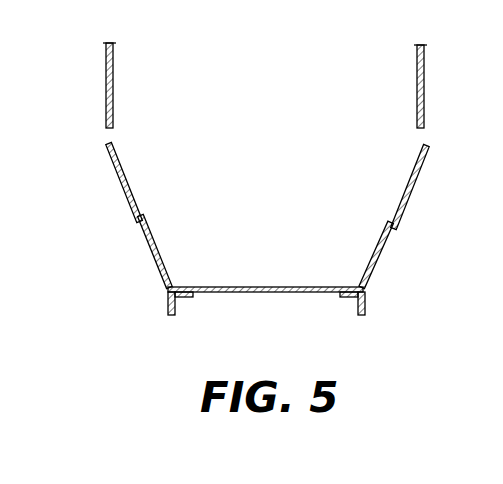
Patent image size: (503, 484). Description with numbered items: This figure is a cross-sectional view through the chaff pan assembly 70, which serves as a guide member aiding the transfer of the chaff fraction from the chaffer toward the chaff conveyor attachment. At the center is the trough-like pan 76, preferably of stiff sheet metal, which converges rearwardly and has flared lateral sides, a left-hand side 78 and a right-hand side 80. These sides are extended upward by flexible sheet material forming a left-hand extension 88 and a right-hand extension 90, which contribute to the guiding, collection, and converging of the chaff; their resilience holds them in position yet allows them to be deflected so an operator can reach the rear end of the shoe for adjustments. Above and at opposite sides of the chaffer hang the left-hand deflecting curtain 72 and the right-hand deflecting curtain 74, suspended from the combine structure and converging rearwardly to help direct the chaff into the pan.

The chaff pan assembly 70 is at (411, 305).
The left-hand deflecting curtain 72 is at (106, 82).
The right-hand deflecting curtain 74 is at (425, 82).
The pan 76 is at (257, 287).
The left-hand flared side 78 is at (158, 262).
The right-hand flared side 80 is at (378, 262).
The left-hand extension 88 is at (128, 183).
The right-hand extension 90 is at (412, 180).